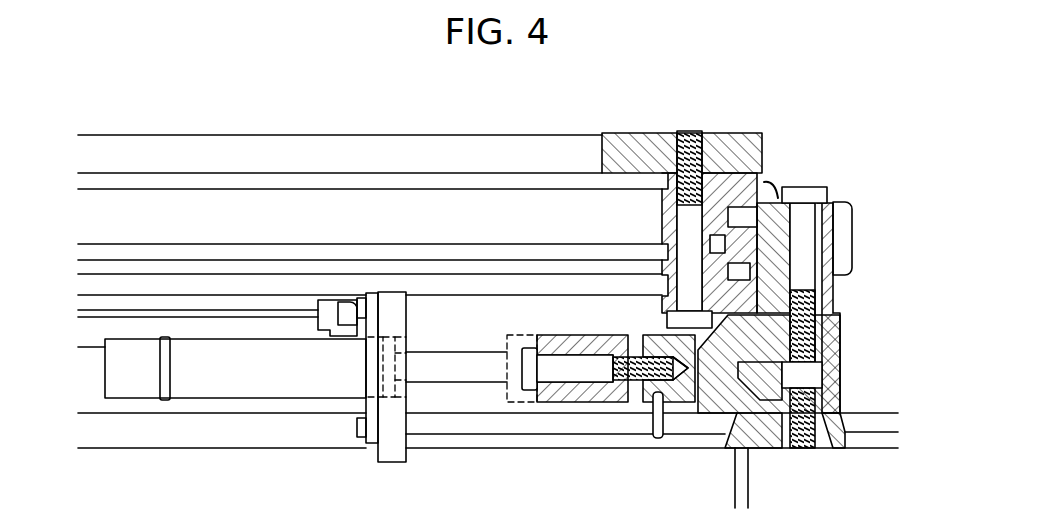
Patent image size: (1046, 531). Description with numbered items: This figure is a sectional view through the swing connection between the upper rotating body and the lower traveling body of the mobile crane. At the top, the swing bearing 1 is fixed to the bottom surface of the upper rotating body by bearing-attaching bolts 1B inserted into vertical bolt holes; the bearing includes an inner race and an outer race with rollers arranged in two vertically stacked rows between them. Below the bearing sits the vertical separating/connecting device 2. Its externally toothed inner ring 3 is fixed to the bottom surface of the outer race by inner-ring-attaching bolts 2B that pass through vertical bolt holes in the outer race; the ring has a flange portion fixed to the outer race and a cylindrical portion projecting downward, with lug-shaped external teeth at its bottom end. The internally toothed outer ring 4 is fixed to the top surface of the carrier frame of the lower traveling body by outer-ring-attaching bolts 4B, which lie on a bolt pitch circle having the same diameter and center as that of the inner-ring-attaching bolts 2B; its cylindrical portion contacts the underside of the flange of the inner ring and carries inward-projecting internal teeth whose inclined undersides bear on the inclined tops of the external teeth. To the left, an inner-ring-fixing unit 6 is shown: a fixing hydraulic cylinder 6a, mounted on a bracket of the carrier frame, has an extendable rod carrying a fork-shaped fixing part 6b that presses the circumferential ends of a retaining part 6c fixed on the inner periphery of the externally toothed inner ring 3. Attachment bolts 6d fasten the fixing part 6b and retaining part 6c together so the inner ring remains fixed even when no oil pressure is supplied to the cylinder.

The swing bearing 1 is at (738, 174).
The bearing-attaching bolts 1B is at (693, 131).
The vertical separating/connecting device 2 is at (848, 361).
The inner-ring-attaching bolts 2B is at (810, 187).
The externally toothed inner ring 3 is at (842, 333).
The internally toothed outer ring 4 is at (827, 430).
The outer-ring-attaching bolts 4B is at (800, 448).
The inner-ring-fixing unit 6 is at (400, 293).
The fixing hydraulic cylinder 6a is at (248, 398).
The fork-shaped fixing part 6b is at (578, 402).
The retaining part 6c is at (683, 402).
The attachment bolts 6d is at (605, 296).